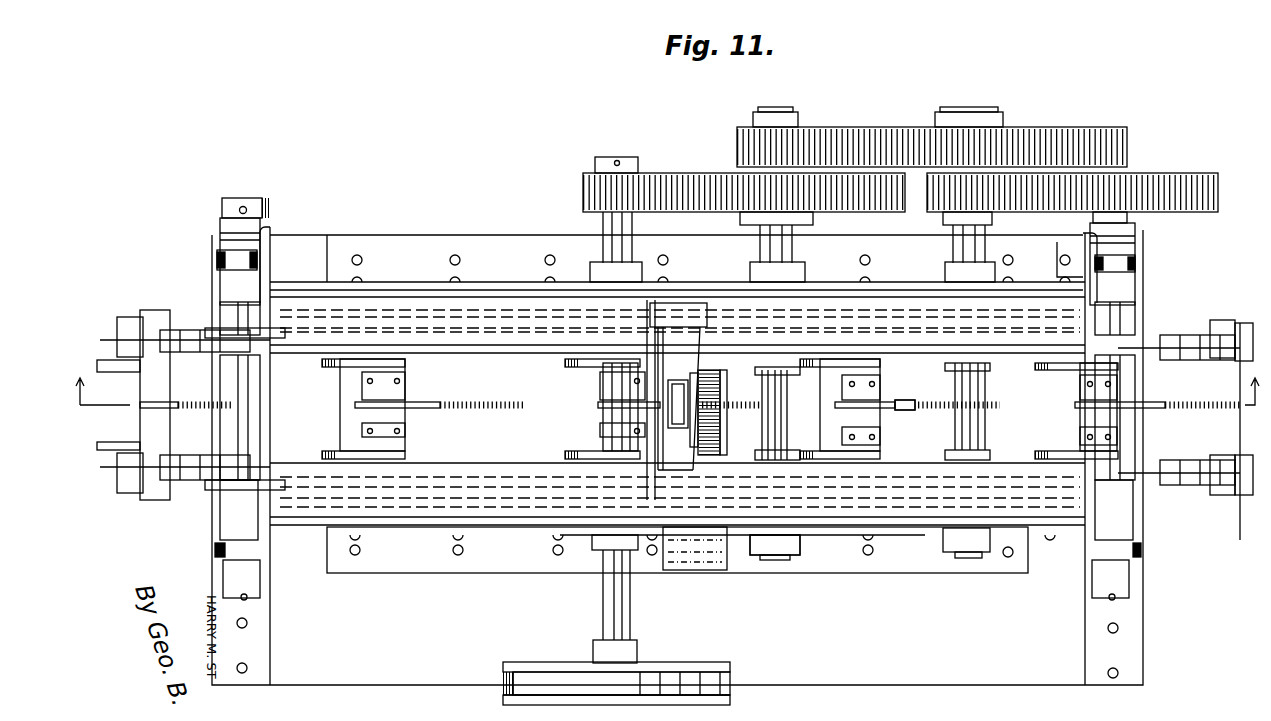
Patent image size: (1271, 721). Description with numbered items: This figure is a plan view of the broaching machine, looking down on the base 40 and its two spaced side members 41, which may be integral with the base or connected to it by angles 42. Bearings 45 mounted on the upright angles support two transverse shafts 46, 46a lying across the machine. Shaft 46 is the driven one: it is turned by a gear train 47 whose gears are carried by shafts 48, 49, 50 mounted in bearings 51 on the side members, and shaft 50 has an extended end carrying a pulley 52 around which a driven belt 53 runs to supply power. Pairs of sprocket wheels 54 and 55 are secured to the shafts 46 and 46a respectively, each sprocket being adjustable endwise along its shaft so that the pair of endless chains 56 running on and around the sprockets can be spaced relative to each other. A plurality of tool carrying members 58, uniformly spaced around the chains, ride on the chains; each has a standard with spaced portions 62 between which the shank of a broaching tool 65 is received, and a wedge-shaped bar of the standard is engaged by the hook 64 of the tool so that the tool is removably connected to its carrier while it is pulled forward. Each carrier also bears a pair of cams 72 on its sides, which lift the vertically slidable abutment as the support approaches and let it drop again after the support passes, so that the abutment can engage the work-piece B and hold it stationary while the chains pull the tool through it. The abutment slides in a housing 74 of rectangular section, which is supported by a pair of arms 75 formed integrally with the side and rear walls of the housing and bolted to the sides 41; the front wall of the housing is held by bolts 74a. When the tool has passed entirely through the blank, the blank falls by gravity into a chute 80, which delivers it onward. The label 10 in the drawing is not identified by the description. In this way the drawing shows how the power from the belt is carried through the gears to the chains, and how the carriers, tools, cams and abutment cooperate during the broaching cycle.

The machine frame section 10 is at (671, 380).
The base 40 is at (380, 655).
The side members 41 is at (390, 580).
The angles 42 is at (444, 588).
The bearings 45 is at (1135, 548).
The transverse shaft 46 is at (1135, 615).
The transverse shaft 46a is at (260, 610).
The gear train 47 is at (932, 132).
The shaft 48 is at (968, 558).
The shaft 49 is at (775, 560).
The shaft 50 is at (625, 605).
The bearings 51 is at (940, 548).
The pulley 52 is at (555, 662).
The driven belt 53 is at (503, 690).
The sprocket wheels 54 is at (1185, 485).
The sprocket wheels 55 is at (195, 480).
The endless chains 56 is at (1205, 495).
The tool carrying member 58 is at (1070, 429).
The spaced portions 62 is at (1117, 395).
The hook 64 is at (1080, 404).
The broaching tool 65 is at (200, 402).
The cams 72 is at (960, 450).
The housing 74 is at (600, 400).
The bolts 74a is at (722, 430).
The arms 75 is at (692, 347).
The chute 80 is at (700, 568).
The work-piece B is at (905, 408).